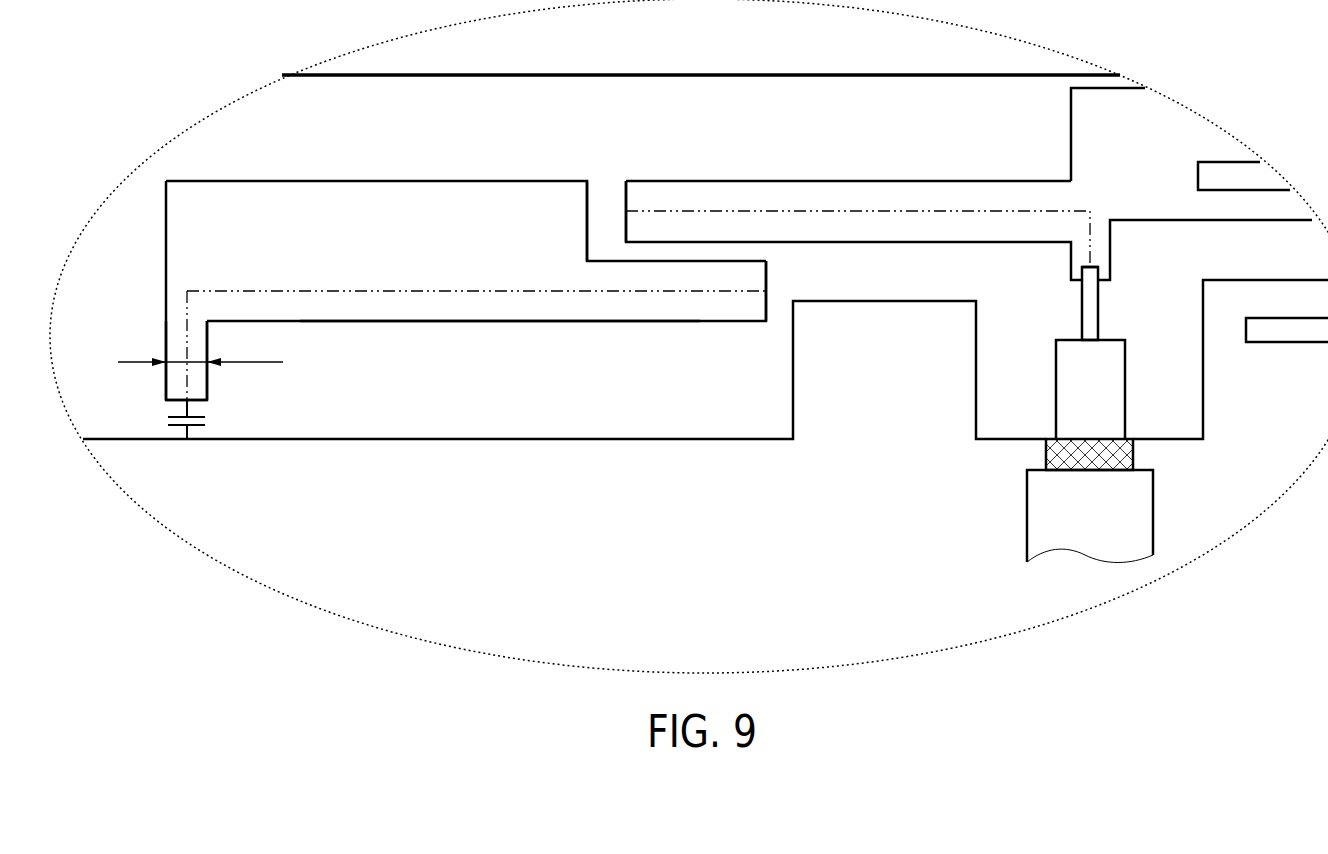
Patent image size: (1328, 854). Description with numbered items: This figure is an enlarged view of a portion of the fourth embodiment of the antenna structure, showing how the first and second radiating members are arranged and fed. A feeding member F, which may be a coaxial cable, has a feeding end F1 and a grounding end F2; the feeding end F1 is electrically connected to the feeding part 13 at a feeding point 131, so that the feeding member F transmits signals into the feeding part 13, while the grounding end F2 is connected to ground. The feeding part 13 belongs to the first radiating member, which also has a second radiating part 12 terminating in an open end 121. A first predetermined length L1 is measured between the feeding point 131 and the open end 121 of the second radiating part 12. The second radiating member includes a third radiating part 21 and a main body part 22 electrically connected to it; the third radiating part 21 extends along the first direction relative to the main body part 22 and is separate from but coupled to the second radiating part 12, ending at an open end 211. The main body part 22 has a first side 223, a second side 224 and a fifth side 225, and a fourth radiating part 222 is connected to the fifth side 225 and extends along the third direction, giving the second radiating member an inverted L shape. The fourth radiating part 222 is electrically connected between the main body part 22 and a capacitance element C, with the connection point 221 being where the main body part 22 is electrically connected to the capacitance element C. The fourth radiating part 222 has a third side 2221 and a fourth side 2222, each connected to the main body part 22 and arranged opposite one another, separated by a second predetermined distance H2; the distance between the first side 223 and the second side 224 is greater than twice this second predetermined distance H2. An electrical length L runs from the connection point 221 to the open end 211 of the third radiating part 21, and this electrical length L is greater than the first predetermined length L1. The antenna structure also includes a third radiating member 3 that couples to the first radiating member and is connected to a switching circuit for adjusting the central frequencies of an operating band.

The third radiating member 3 is at (222, 530).
The second radiating part 12 is at (890, 228).
The open end 121 is at (626, 195).
The feeding part 13 is at (1110, 262).
The feeding point 131 is at (1090, 266).
The third radiating part 21 is at (656, 308).
The open end 211 is at (766, 272).
The main body part 22 is at (375, 168).
The connection point 221 is at (173, 387).
The fourth radiating part 222 is at (175, 333).
The third side 2221 is at (208, 387).
The fourth side 2222 is at (165, 378).
The first side 223 is at (587, 228).
The second side 224 is at (166, 220).
The fifth side 225 is at (492, 321).
The capacitance element C is at (195, 419).
The second predetermined distance H2 is at (200, 351).
The electrical length L is at (455, 291).
The first predetermined length L1 is at (770, 211).
The feeding member F is at (1023, 519).
The feeding end F1 is at (1090, 310).
The grounding end F2 is at (1120, 457).